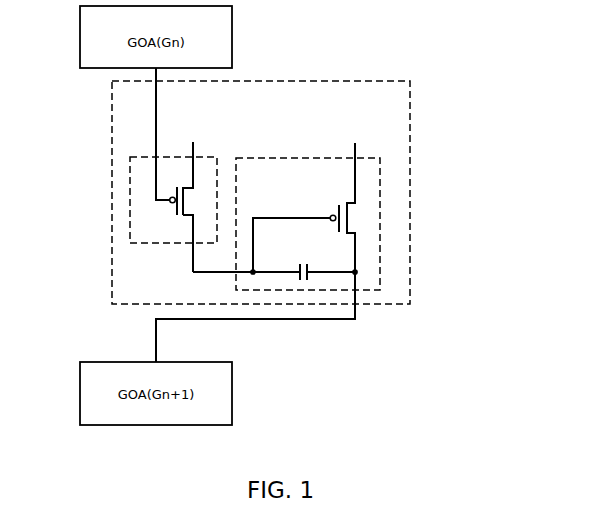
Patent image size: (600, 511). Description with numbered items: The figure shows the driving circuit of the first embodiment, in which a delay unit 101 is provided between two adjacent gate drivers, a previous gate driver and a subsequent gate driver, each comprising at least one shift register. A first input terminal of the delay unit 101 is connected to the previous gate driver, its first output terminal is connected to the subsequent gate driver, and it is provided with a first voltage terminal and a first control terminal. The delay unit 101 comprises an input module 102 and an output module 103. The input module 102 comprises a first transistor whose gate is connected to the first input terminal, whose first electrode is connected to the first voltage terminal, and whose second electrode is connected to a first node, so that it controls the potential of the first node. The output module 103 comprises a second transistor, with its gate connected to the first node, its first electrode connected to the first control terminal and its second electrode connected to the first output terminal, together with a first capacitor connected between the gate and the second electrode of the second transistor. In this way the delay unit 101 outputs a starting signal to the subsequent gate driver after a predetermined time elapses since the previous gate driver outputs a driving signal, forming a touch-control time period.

The delay unit 101 is at (380, 101).
The input module 102 is at (155, 230).
The output module 103 is at (365, 182).